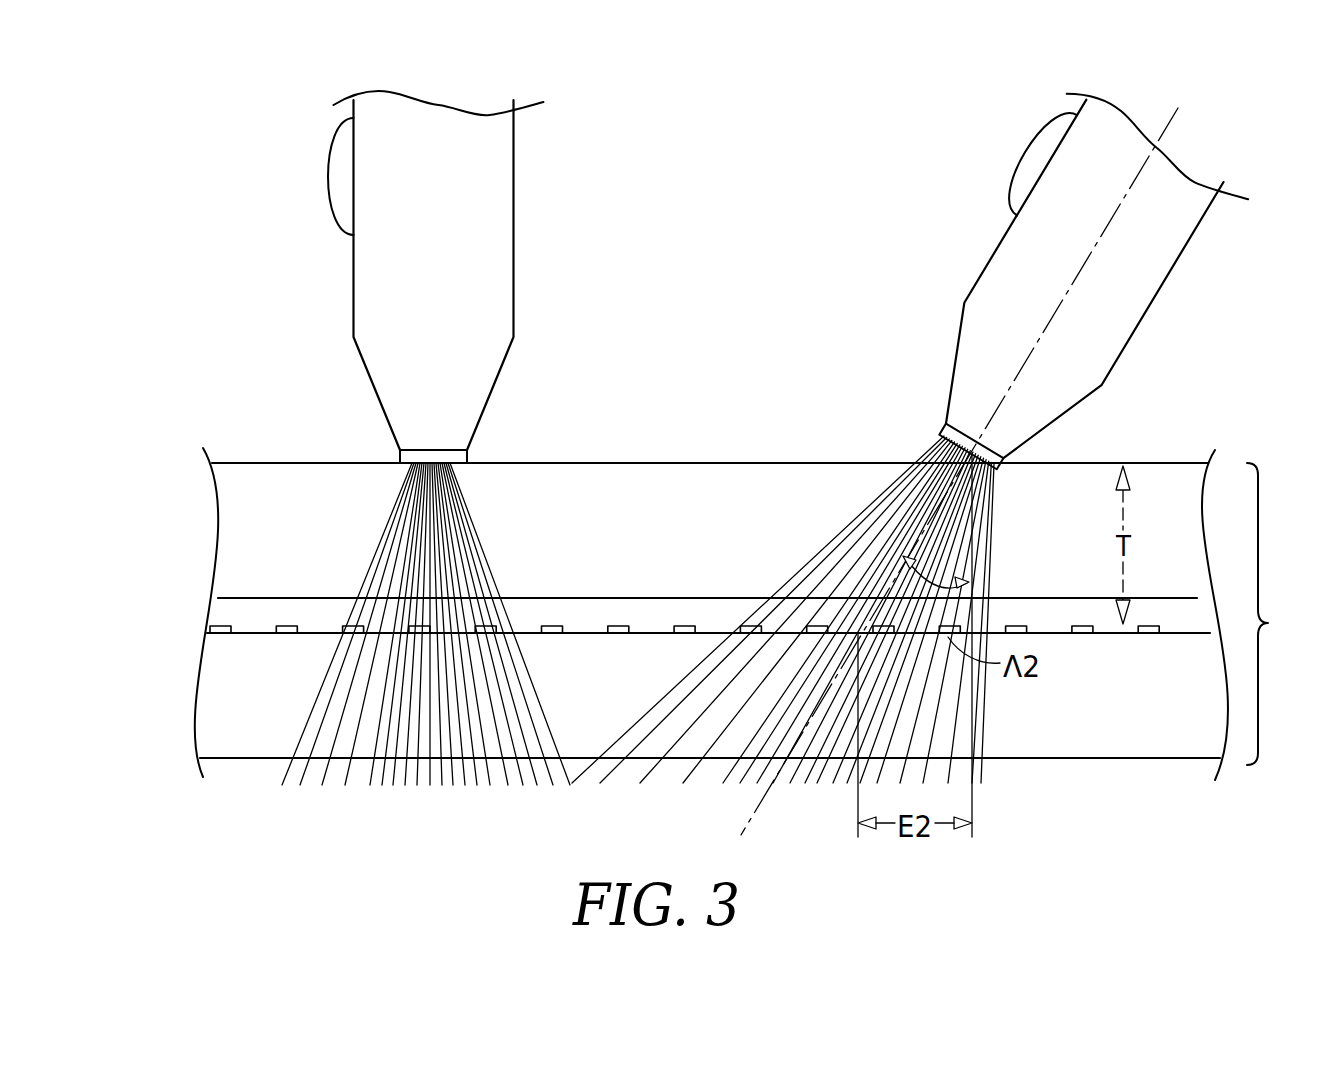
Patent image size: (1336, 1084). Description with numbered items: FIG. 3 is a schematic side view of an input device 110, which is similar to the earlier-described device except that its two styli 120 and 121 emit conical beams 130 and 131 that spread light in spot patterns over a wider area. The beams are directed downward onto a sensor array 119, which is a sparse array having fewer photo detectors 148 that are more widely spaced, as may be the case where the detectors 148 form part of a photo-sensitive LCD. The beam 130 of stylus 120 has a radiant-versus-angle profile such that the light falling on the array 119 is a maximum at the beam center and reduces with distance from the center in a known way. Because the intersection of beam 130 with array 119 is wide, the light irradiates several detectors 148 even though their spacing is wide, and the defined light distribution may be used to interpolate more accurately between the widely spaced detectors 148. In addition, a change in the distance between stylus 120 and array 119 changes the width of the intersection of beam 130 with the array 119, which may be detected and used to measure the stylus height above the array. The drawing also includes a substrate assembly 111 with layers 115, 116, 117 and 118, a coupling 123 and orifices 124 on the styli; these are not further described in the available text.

The input device 110 is at (726, 283).
The substrate assembly 111 is at (1282, 614).
The substrate layer 115 is at (240, 508).
The top surface of substrate 116 is at (260, 460).
The layer interface 117 is at (232, 610).
The base layer 118 is at (212, 713).
The sensor array 119 is at (252, 635).
The stylus 120 is at (352, 292).
The stylus 121 is at (990, 268).
The nozzle coupling 123 is at (328, 169).
The nozzle orifice 124 is at (400, 457).
The beam 130 is at (478, 532).
The beam 131 is at (862, 523).
The detectors 148 is at (684, 626).